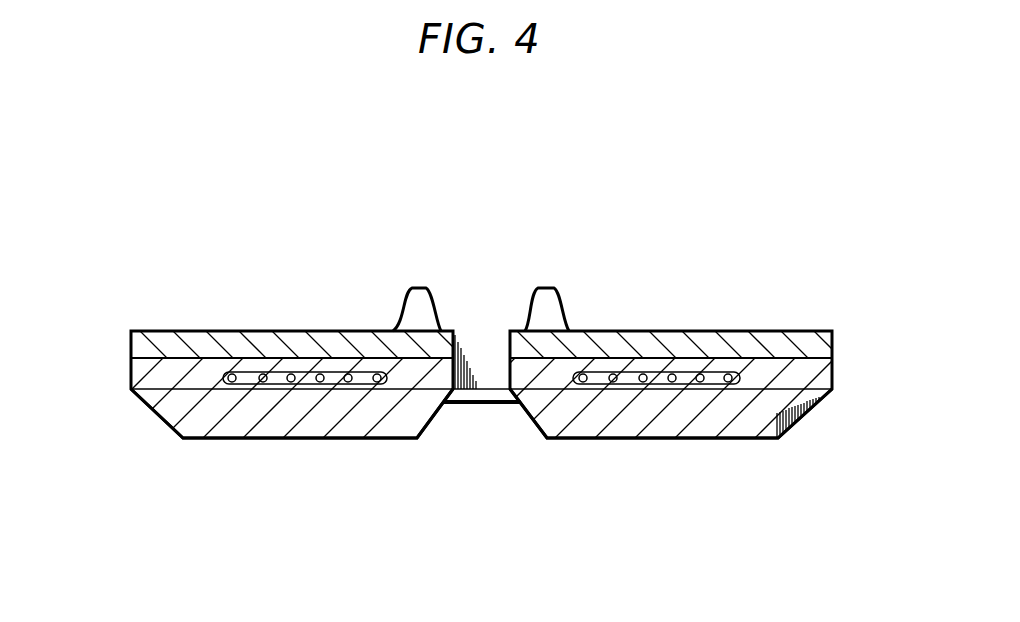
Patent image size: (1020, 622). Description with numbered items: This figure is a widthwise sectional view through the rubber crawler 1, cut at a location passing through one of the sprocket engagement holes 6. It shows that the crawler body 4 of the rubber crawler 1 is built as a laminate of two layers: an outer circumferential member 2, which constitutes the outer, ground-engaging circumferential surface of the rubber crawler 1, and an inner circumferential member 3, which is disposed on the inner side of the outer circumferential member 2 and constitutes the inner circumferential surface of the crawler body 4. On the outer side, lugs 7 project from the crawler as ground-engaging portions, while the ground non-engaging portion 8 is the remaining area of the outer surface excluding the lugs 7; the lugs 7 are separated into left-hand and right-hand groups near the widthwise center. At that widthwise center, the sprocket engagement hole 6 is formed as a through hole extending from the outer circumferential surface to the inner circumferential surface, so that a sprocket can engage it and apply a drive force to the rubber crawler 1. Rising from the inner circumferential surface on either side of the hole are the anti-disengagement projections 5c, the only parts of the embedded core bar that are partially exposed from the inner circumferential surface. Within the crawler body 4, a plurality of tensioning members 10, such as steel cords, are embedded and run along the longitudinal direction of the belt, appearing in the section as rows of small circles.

The rubber crawler 1 is at (774, 286).
The outer circumferential member 2 is at (132, 368).
The inner circumferential member 3 is at (132, 339).
The crawler body 4 is at (83, 302).
The anti-disengagement projection 5c is at (423, 286).
The sprocket engagement hole 6 is at (506, 388).
The lug 7 is at (218, 438).
The ground non-engaging portion 8 is at (543, 390).
The tensioning member 10 is at (291, 382).